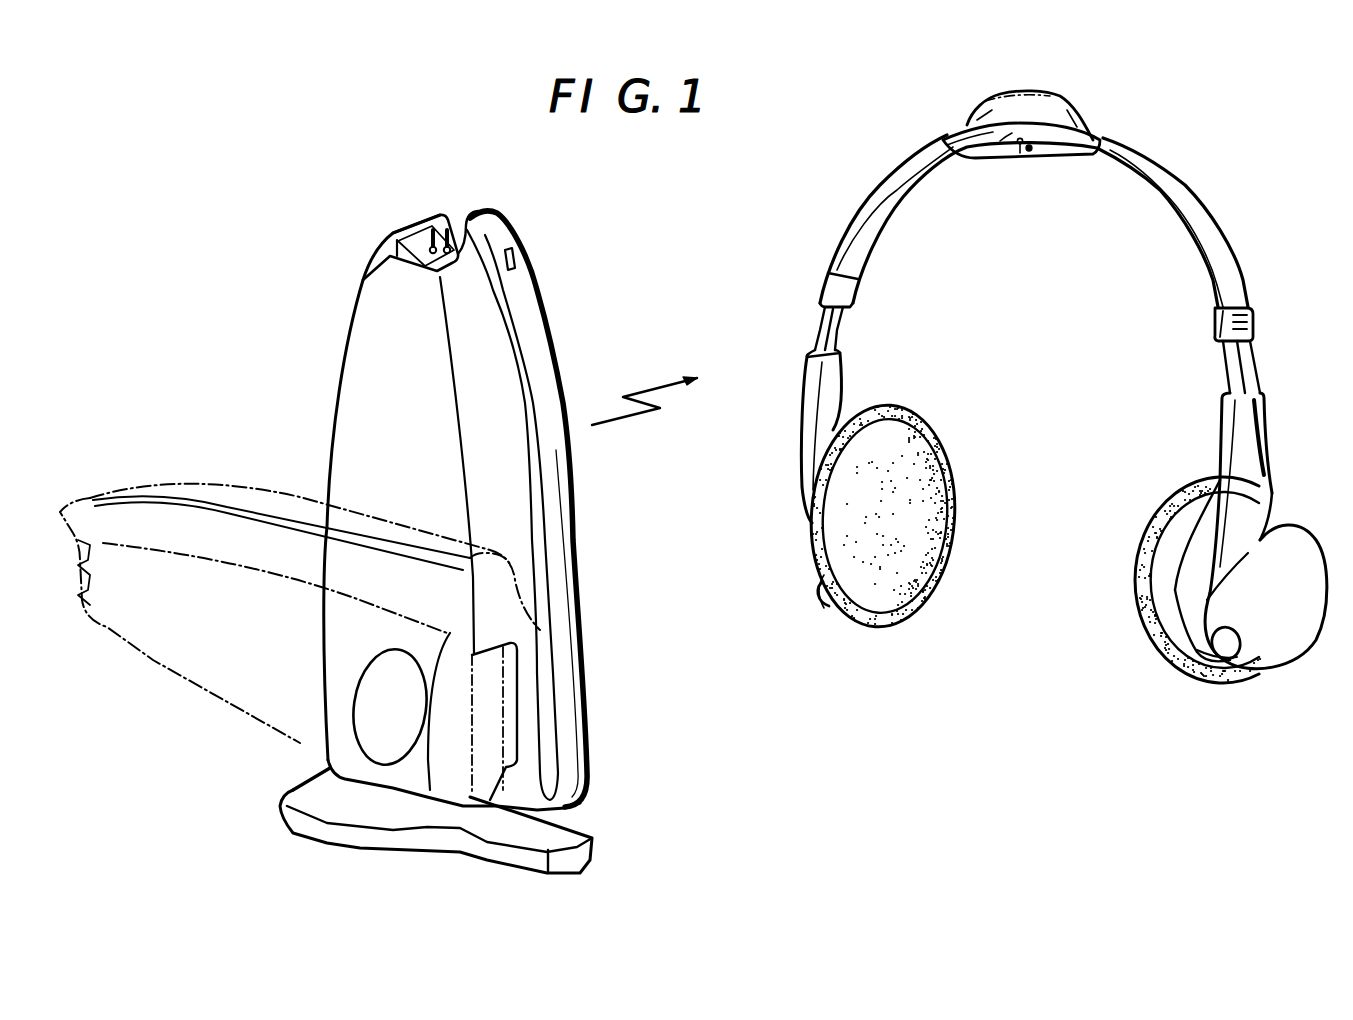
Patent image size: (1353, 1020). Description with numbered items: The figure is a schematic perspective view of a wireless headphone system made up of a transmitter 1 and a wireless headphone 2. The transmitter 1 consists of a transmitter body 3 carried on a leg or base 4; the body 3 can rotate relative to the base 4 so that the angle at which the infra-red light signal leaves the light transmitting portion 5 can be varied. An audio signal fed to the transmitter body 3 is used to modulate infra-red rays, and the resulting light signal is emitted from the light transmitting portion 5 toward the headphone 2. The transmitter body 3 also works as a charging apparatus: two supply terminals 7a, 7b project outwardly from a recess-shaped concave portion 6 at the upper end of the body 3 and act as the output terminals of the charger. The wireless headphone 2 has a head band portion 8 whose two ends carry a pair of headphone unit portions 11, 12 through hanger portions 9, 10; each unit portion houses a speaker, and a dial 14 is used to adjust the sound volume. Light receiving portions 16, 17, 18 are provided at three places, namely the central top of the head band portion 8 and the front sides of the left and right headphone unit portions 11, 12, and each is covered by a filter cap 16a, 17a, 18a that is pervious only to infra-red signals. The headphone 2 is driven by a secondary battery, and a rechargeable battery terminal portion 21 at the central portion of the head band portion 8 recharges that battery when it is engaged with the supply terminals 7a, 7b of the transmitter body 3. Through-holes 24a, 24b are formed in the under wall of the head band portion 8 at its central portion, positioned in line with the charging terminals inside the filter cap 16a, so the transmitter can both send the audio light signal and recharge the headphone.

The transmitter 1 is at (324, 314).
The wireless headphone 2 is at (997, 679).
The transmitter body 3 is at (350, 362).
The base 4 is at (297, 795).
The light transmitting portion 5 is at (540, 313).
The recess-shaped concave portion 6 is at (432, 261).
The supply terminal 7a is at (449, 230).
The supply terminal 7b is at (431, 230).
The head band portion 8 is at (883, 183).
The hanger portion 9 is at (1244, 370).
The hanger portion 10 is at (827, 337).
The headphone unit portion 11 is at (1293, 630).
The headphone unit portion 12 is at (802, 487).
The dial 14 is at (1273, 500).
The light receiving portion 16 is at (1078, 112).
The filter cap 16a is at (980, 117).
The light receiving portion 17 is at (1183, 673).
The filter cap 17a is at (1230, 670).
The light receiving portion 18 is at (821, 605).
The filter cap 18a is at (822, 590).
The rechargeable battery terminal portion 21 is at (1009, 141).
The through-hole 24a is at (1020, 150).
The through-hole 24b is at (1031, 151).